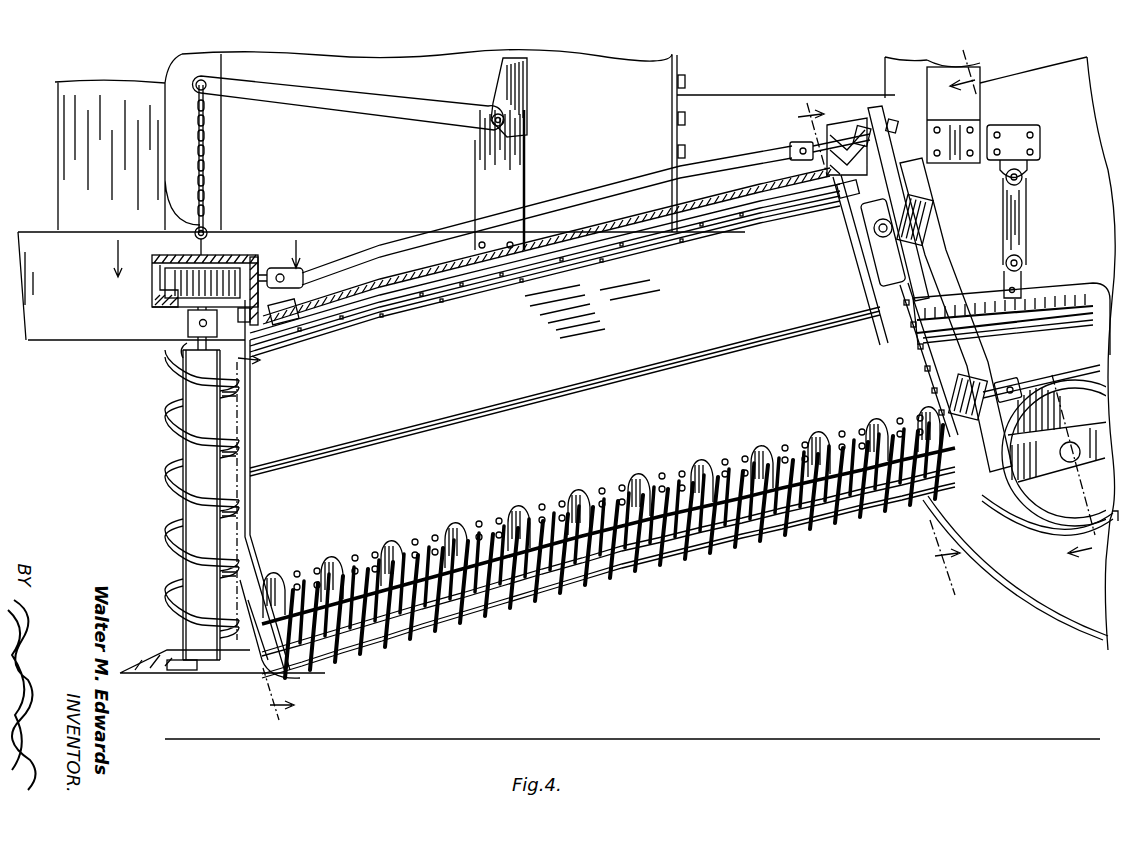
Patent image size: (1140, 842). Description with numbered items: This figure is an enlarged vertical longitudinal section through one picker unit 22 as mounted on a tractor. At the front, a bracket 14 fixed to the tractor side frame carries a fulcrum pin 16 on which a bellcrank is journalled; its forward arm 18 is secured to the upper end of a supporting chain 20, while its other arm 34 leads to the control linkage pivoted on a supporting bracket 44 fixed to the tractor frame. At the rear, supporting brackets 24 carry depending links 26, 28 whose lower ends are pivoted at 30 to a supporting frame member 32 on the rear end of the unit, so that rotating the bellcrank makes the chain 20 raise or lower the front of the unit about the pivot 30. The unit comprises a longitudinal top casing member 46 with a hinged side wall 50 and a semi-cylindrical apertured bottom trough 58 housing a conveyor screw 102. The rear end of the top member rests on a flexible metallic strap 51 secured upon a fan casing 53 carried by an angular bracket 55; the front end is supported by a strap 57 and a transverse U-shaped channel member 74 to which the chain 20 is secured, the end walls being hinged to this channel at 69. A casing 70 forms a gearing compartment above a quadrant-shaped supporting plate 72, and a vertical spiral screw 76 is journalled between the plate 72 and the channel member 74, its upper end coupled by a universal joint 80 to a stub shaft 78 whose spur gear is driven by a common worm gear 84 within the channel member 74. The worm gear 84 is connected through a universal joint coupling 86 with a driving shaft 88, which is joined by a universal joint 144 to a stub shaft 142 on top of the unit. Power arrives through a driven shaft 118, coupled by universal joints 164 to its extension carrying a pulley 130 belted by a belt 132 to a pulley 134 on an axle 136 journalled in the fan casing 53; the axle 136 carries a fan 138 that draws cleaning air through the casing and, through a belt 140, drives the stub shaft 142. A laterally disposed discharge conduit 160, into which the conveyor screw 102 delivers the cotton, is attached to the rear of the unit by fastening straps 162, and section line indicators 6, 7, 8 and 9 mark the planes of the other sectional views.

The section line 6- 6 is at (1023, 324).
The section line 7- 7 is at (869, 349).
The section line 8- 8 is at (257, 535).
The section line 9- 9 is at (206, 258).
The bracket 14 is at (521, 166).
The fulcrum pin 16 is at (492, 126).
The forward arm of bellcrank 18 is at (247, 92).
The supporting chain 20 is at (199, 140).
The picker unit 22 is at (148, 403).
The supporting bracket 24 is at (1028, 116).
The link 26 is at (1022, 184).
The links 28 is at (1023, 236).
The pivot connection 30 is at (1022, 263).
The supporting frame member 32 is at (1064, 290).
The bellcrank arm 34 is at (513, 75).
The supporting bracket 44 is at (940, 103).
The top casing member 46 is at (600, 228).
The casing cover member 50 is at (565, 330).
The flexible metallic strap 51 is at (835, 196).
The fan casing 53 is at (910, 300).
The angular supporting bracket 55 is at (900, 318).
The strap 57 is at (297, 320).
The bottom casing member 58 is at (428, 545).
The hinge 69 is at (255, 322).
The casing 70 is at (258, 635).
The supporting plate 72 is at (165, 665).
The channel member 74 is at (235, 258).
The spiral screw 76 is at (193, 445).
The stub shaft 78 is at (188, 318).
The universal joint coupling 80 is at (187, 343).
The worm type driving gear 84 is at (160, 286).
The universal joint coupling 86 is at (283, 268).
The driving shaft 88 is at (368, 246).
The conveyor screw 102 is at (522, 520).
The driven shaft 118 is at (1071, 453).
The pulley 130 is at (978, 382).
The belt 132 is at (936, 263).
The pulley 134 is at (931, 222).
The axle 136 is at (893, 222).
The fan 138 is at (843, 212).
The belt connection 140 is at (892, 170).
The stub shaft 142 is at (837, 140).
The universal joint 144 is at (792, 143).
The discharge conduit 160 is at (1030, 515).
The fastening strap 162 is at (983, 505).
The universal joint 164 is at (1013, 380).